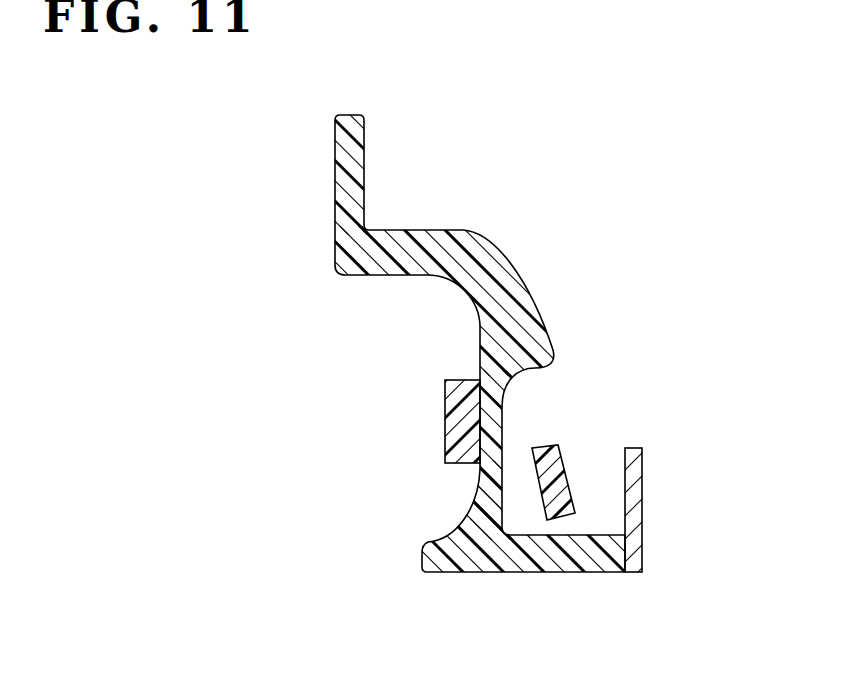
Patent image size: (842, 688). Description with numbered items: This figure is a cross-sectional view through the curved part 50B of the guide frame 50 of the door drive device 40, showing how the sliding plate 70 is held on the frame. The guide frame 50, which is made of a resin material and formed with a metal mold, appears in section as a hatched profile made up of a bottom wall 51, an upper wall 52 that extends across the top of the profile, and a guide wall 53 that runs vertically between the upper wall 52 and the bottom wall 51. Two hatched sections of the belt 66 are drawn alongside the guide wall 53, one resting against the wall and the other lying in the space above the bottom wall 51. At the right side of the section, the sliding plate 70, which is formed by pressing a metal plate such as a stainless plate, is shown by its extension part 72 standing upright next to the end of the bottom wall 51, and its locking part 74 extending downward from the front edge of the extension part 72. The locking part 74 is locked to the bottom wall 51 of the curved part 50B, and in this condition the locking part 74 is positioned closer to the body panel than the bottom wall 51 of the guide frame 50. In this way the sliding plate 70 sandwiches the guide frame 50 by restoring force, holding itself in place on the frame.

The door drive device 40 is at (649, 82).
The guide frame 50 is at (471, 356).
The curved part 50B is at (332, 159).
The upper wall 52 is at (418, 229).
The guide wall 53 is at (503, 400).
The bottom wall 51 is at (572, 573).
The belt 66 is at (537, 493).
The sliding plate 70 is at (689, 527).
The extension part 72 is at (643, 457).
The locking part 74 is at (643, 555).